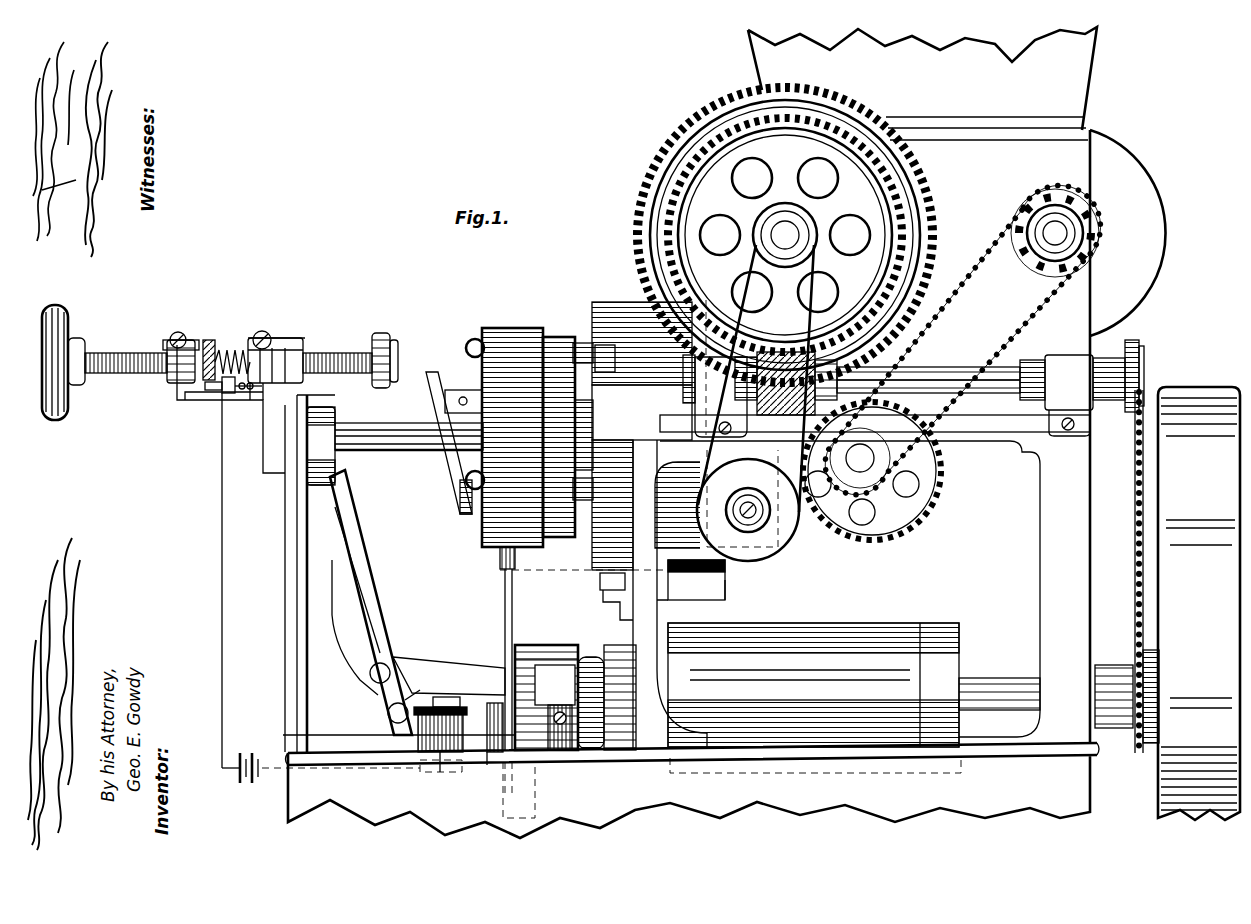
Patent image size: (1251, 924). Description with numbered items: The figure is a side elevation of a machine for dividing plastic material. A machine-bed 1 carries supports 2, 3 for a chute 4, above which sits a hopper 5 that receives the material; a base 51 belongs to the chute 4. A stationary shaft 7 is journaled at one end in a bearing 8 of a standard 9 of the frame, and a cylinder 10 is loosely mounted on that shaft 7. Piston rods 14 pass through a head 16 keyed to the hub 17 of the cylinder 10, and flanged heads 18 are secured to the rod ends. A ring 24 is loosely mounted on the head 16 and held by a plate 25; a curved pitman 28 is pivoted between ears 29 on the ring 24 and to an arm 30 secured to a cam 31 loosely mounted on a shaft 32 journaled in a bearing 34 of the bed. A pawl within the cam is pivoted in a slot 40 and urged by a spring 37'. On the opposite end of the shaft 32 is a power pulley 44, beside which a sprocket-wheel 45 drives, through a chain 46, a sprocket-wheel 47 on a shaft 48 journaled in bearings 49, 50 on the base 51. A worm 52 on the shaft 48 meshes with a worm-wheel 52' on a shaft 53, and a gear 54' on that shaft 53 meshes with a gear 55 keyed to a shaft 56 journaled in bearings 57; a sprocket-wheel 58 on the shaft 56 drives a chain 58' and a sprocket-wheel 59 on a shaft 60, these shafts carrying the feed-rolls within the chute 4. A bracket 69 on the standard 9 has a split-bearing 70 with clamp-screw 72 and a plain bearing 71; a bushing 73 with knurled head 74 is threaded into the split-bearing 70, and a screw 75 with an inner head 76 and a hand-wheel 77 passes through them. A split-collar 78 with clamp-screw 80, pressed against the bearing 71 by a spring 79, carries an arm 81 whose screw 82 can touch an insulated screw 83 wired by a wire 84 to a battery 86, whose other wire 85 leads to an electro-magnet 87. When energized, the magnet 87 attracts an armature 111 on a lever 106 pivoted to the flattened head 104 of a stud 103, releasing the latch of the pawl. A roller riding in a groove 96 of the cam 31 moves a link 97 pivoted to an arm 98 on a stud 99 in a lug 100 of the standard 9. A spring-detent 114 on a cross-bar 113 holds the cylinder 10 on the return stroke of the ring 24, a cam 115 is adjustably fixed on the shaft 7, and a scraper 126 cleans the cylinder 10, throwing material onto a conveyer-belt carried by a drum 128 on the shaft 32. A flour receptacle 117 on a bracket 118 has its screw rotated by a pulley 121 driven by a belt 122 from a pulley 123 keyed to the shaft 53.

The machine-bed 1 is at (691, 786).
The support 2 is at (670, 594).
The support 3 is at (875, 436).
The chute 4 is at (928, 360).
The hopper 5 is at (957, 181).
The stationary shaft 7 is at (390, 455).
The bearing 8 is at (321, 446).
The standard 9 is at (310, 573).
The cylinder 10 is at (642, 436).
The rods 14 is at (580, 340).
The head 16 is at (559, 437).
The hub 17 is at (588, 418).
The flanged heads 18 is at (475, 345).
The ring 24 is at (512, 437).
The plate 25 is at (445, 355).
The curved pitman 28 is at (503, 614).
The ears 29 is at (505, 570).
The arm 30 is at (538, 805).
The cam 31 is at (546, 697).
The shaft 32 is at (975, 690).
The bearing 34 is at (1103, 680).
The spring 37' is at (553, 751).
The slot 40 is at (572, 752).
The pulley 44 is at (1199, 603).
The sprocket-wheel 45 is at (1157, 675).
The chain 46 is at (1132, 528).
The sprocket wheel 47 is at (1142, 372).
The shaft 48 is at (928, 363).
The bearing 49 is at (694, 400).
The bearing 50 is at (1072, 395).
The base 51 is at (875, 425).
The worm 52 is at (786, 363).
The worm-wheel 52' is at (785, 235).
The shaft 53 is at (787, 232).
The gear 54' is at (810, 235).
The gear 55 is at (905, 530).
The shaft 56 is at (870, 478).
The bearings 57 is at (862, 490).
The sprocket-wheel 58 is at (923, 458).
The chain 58' is at (962, 339).
The sprocket-wheel 59 is at (1035, 268).
The shaft 60 is at (1057, 233).
The bracket 69 is at (275, 475).
The split-bearing 70 is at (178, 338).
The plain bearing 71 is at (303, 345).
The clamp-screw 72 is at (170, 336).
The bushing 73 is at (167, 350).
The knurled head 74 is at (213, 340).
The screw 75 is at (90, 373).
The head 76 is at (390, 335).
The hand-wheel 77 is at (62, 420).
The split-collar 78 is at (265, 335).
The spring 79 is at (225, 345).
The clamp-screw 80 is at (272, 338).
The arm 81 is at (280, 393).
The screw 82 is at (250, 390).
The screw 83 is at (232, 394).
The wire 84 is at (222, 582).
The wire 85 is at (330, 772).
The battery 86 is at (241, 758).
The electro-magnet 87 is at (435, 775).
The groove 96 is at (590, 657).
The link 97 is at (449, 676).
The arm 98 is at (378, 588).
The stud 99 is at (390, 713).
The lug 100 is at (415, 695).
The stud 103 is at (490, 770).
The flattened head 104 is at (481, 727).
The lever 106 is at (445, 740).
The armature 111 is at (445, 698).
The cross-bar 113 is at (604, 607).
The spring-detent 114 is at (600, 585).
The cam 115 is at (465, 520).
The receptacle 117 is at (790, 535).
The bracket 118 is at (722, 580).
The pulley 121 is at (657, 407).
The belt 122 is at (785, 242).
The pulley 123 is at (812, 237).
The scraper 126 is at (706, 598).
The drum 128 is at (813, 685).